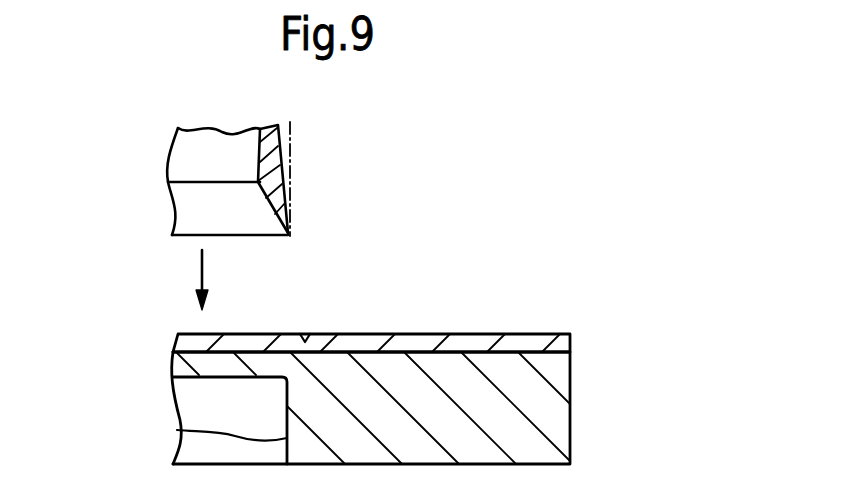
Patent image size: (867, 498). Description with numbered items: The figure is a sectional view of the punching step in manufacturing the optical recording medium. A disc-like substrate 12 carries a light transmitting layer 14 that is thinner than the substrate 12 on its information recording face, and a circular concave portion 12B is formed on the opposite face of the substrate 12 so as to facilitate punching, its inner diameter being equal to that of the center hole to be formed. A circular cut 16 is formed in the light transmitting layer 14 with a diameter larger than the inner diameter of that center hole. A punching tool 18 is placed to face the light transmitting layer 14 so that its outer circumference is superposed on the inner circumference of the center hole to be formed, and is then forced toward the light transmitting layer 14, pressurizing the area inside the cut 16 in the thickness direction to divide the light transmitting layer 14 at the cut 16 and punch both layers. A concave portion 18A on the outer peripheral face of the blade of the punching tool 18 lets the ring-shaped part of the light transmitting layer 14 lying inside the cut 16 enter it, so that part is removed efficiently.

The substrate 12 is at (570, 388).
The circular concave portion 12B is at (177, 433).
The light transmitting layer 14 is at (488, 334).
The cut 16 is at (305, 340).
The punching tool 18 is at (302, 210).
The concave portion 18A is at (283, 150).